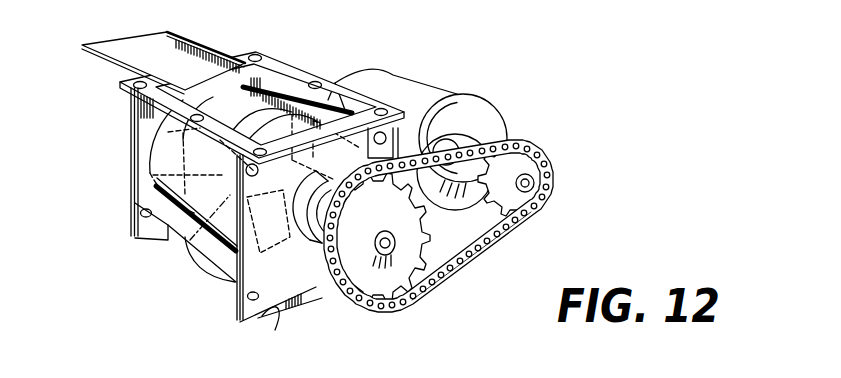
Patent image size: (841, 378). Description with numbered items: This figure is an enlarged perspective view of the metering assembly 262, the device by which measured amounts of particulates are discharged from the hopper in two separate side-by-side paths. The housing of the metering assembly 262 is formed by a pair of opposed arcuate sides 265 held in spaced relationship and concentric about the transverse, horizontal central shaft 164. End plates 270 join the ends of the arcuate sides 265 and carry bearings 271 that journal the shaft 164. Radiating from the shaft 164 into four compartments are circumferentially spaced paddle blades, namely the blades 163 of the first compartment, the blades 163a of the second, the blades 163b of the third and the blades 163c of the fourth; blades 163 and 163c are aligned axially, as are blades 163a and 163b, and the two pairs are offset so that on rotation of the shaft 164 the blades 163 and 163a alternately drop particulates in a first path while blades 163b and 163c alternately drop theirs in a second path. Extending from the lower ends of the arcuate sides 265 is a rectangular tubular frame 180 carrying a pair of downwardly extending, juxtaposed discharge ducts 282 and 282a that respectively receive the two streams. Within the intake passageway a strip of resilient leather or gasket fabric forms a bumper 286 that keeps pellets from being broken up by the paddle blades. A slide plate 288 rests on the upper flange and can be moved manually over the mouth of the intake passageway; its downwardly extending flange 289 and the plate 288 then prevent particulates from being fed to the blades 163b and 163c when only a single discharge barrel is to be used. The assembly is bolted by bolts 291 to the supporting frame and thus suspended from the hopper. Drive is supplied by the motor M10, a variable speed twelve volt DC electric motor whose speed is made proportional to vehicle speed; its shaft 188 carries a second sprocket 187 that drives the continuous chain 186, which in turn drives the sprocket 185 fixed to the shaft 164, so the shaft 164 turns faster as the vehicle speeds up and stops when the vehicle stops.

The slide plate 288 is at (130, 46).
The downwardly extending flange 289 is at (227, 78).
The bumper 286 is at (260, 70).
The bolts 291 is at (390, 130).
The motor M10 is at (473, 108).
The second sprocket 187 is at (530, 157).
The shaft 188 is at (542, 190).
The paddle blades 163 is at (242, 287).
The paddle blades 163a is at (192, 231).
The paddle blades 163b is at (160, 175).
The paddle blades 163c is at (168, 132).
The metering assembly 262 is at (131, 147).
The arcuate sides 265 is at (144, 195).
The end plates 270 is at (143, 223).
The discharge duct 282 is at (258, 317).
The discharge duct 282a is at (197, 268).
The rectangular tubular frame 180 is at (288, 321).
The bearings 271 is at (287, 263).
The central shaft 164 is at (410, 230).
The sprocket 185 is at (348, 306).
The continuous chain 186 is at (387, 303).